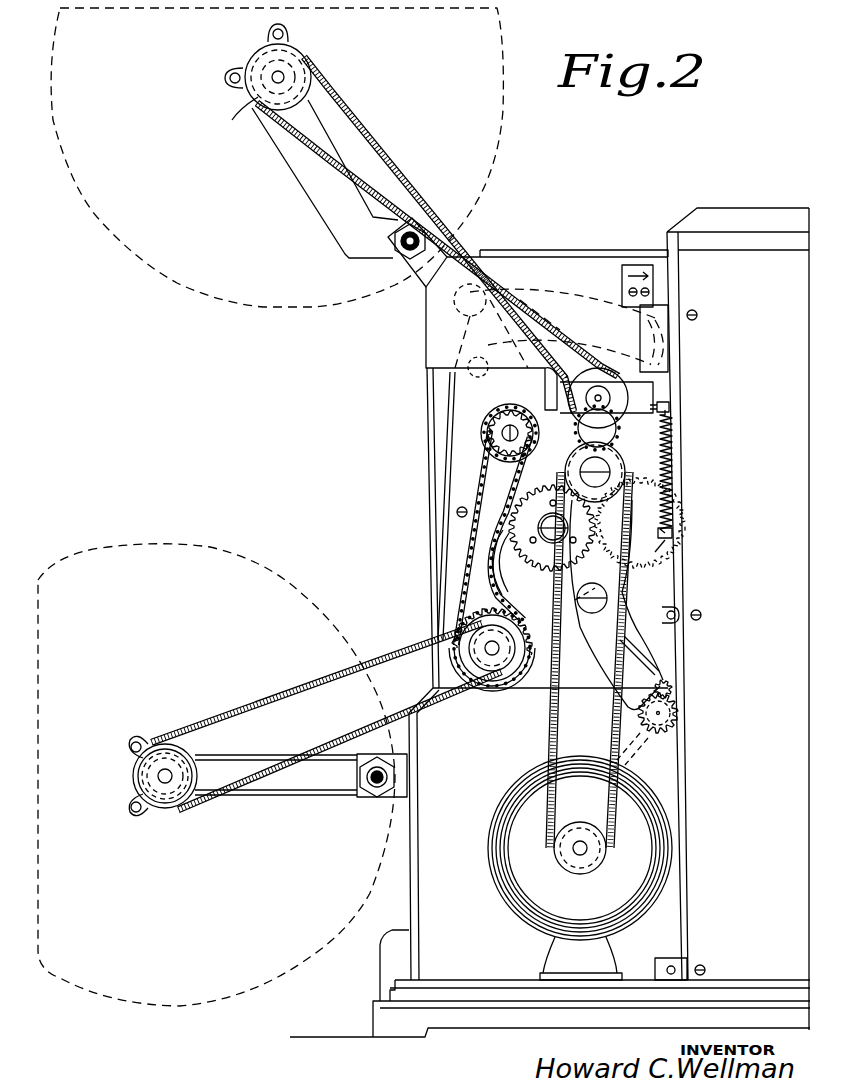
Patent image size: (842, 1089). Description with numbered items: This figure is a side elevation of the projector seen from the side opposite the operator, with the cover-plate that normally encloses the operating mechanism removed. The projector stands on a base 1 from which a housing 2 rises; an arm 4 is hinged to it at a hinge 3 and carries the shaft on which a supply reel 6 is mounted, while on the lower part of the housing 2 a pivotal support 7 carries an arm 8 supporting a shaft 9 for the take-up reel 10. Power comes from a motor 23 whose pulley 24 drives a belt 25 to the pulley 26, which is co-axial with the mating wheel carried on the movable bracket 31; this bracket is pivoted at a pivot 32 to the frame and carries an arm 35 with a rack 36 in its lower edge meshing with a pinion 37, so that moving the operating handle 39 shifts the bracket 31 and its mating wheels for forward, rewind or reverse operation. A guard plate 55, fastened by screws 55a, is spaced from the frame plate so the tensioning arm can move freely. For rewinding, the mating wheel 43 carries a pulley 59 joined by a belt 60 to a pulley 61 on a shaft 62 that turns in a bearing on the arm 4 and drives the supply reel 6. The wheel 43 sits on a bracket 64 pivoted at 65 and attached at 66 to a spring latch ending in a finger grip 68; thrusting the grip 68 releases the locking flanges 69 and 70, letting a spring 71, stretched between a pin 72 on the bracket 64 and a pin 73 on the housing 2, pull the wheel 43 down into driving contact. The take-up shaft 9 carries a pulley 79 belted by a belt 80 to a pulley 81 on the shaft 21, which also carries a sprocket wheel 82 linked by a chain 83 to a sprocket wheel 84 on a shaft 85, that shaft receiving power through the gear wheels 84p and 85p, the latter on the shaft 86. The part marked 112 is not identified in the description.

The base 1 is at (387, 1020).
The housing 2 is at (430, 505).
The hinge 3 is at (410, 255).
The arm 4 is at (312, 190).
The reel 6 is at (506, 96).
The pivotal support 7 is at (378, 796).
The arm 8 is at (305, 790).
The shaft 9 is at (165, 776).
The reel 10 is at (190, 548).
The shaft 21 is at (492, 656).
The motor 23 is at (512, 832).
The pulley 24 is at (580, 870).
The belt 25 is at (556, 714).
The pulley 26 is at (625, 470).
The movable bracket 31 is at (642, 638).
The pivot 32 is at (606, 600).
The arm 35 is at (648, 665).
The rack 36 is at (668, 688).
The pinion 37 is at (680, 712).
The operating handle 39 is at (640, 740).
The mating wheel 43 is at (620, 447).
The guard plate 55 is at (478, 336).
The screws 55a is at (494, 377).
The pulley 59 is at (598, 380).
The belt 60 is at (389, 158).
The pulley 61 is at (255, 100).
The shaft 62 is at (286, 72).
The bracket 64 is at (545, 400).
The pivot 65 is at (488, 287).
The pivotal attachment 66 is at (662, 360).
The finger grip 68 is at (637, 268).
The locking flange 69 is at (645, 322).
The locking flange 70 is at (625, 302).
The spring 71 is at (670, 388).
The pin 72 is at (672, 407).
The pin 73 is at (676, 532).
The pulley 79 is at (160, 800).
The belt 80 is at (352, 680).
The pulley 81 is at (470, 635).
The sprocket wheel 82 is at (498, 612).
The chain 83 is at (440, 585).
The sprocket wheel 84 is at (500, 438).
The gear wheel 84p is at (546, 492).
The shaft 85 is at (500, 420).
The gear wheel 85p is at (652, 510).
The shaft 86 is at (660, 548).
The casing 112 is at (732, 594).